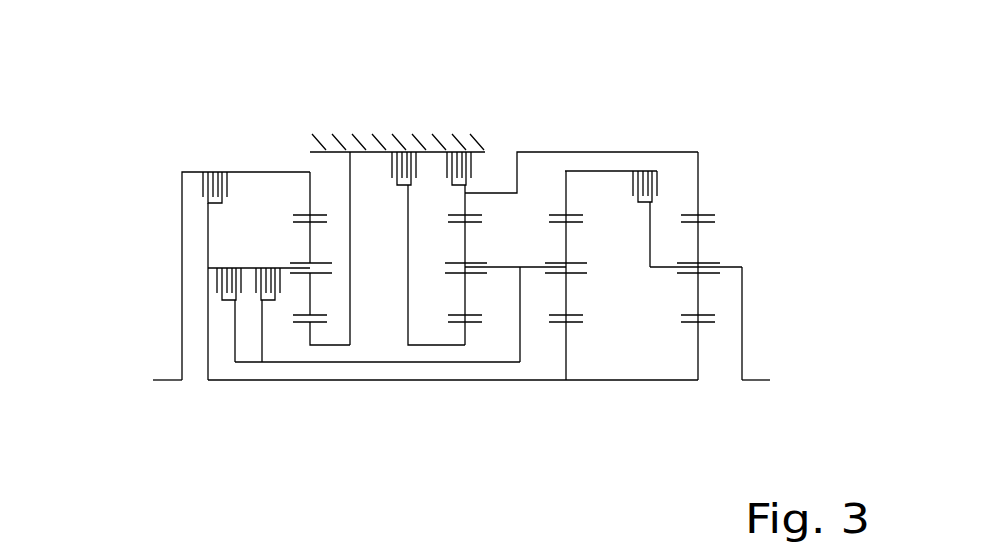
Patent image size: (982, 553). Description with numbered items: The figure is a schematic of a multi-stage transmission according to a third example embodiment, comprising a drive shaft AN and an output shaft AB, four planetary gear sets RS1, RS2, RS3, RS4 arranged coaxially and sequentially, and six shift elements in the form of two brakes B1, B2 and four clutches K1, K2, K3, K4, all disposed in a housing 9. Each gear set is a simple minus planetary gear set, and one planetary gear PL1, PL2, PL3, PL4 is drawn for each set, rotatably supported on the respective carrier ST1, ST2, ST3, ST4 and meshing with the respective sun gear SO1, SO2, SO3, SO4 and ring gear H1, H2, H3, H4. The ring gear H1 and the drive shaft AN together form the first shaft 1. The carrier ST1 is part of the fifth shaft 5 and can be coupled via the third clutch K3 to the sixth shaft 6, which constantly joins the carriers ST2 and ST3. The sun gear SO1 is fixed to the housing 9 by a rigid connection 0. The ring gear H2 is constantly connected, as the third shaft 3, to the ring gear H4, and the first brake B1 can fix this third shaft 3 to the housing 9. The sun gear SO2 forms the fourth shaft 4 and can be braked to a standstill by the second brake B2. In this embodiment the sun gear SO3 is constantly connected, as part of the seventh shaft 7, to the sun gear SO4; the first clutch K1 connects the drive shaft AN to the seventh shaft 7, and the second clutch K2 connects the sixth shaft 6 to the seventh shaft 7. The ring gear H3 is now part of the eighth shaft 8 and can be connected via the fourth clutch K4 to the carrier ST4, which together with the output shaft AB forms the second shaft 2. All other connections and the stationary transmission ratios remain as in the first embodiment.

The rigid connection 0 is at (310, 200).
The first shaft 1 is at (182, 203).
The second shaft 2 is at (743, 303).
The third shaft 3 is at (566, 202).
The fourth shaft 4 is at (393, 150).
The fifth shaft 5 is at (292, 274).
The sixth shaft 6 is at (307, 364).
The seventh shaft 7 is at (330, 381).
The eighth shaft 8 is at (597, 171).
The housing 9 is at (350, 180).
The drive shaft AN is at (156, 380).
The output shaft AB is at (756, 380).
The first clutch K1 is at (205, 173).
The second clutch K2 is at (218, 288).
The third clutch K3 is at (290, 268).
The fourth clutch K4 is at (645, 187).
The first brake B1 is at (448, 168).
The second brake B2 is at (393, 152).
The ring gear of the first planetary gear set H1 is at (288, 268).
The ring gear of the second planetary gear set H2 is at (466, 197).
The ring gear of the third planetary gear set H3 is at (633, 171).
The ring gear of the fourth planetary gear set H4 is at (699, 155).
The sun gear of the first planetary gear set SO1 is at (307, 328).
The sun gear of the second planetary gear set SO2 is at (467, 332).
The sun gear of the third planetary gear set SO3 is at (593, 333).
The sun gear of the fourth planetary gear set SO4 is at (700, 343).
The carrier of the first planetary gear set ST1 is at (310, 172).
The carrier of the second planetary gear set ST2 is at (502, 267).
The carrier of the third planetary gear set ST3 is at (530, 267).
The carrier of the fourth planetary gear set ST4 is at (730, 267).
The planetary gear of the first planetary gear set PL1 is at (305, 304).
The planetary gear of the second planetary gear set PL2 is at (465, 287).
The planetary gear of the third planetary gear set PL3 is at (700, 178).
The planetary gear of the fourth planetary gear set PL4 is at (700, 240).
The first planetary gear set RS1 is at (284, 327).
The second planetary gear set RS2 is at (483, 331).
The third planetary gear set RS3 is at (708, 360).
The fourth planetary gear set RS4 is at (567, 340).